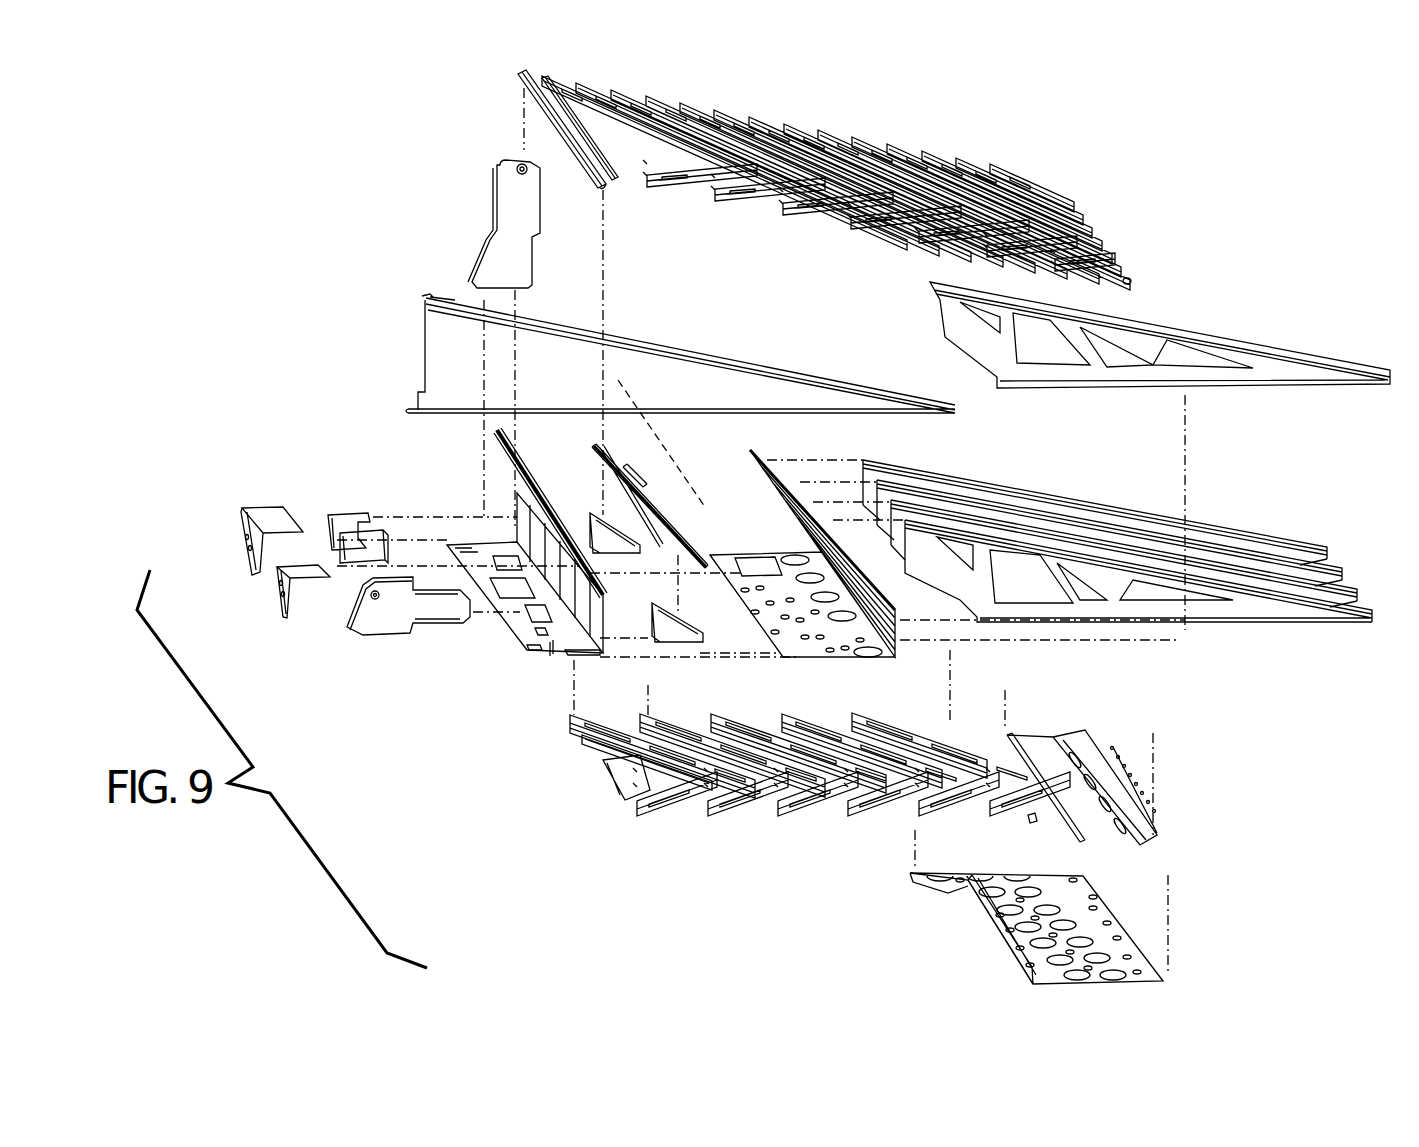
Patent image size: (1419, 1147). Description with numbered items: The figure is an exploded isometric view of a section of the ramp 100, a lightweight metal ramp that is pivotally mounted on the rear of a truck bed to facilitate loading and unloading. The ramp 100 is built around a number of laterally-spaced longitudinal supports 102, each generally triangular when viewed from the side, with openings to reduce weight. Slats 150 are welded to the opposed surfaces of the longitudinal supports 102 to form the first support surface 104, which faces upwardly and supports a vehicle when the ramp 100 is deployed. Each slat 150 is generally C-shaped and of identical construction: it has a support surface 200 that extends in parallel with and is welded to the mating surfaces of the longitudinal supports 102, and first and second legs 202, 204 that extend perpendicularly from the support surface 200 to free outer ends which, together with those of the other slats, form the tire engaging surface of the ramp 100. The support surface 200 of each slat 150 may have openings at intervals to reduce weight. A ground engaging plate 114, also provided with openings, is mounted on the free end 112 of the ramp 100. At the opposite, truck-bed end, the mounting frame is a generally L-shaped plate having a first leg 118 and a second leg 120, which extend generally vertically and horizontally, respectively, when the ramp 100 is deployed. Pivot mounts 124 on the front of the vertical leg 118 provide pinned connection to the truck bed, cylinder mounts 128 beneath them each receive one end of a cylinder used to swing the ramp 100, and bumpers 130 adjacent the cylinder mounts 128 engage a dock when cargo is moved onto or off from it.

The ramp 100 is at (1214, 123).
The longitudinal support 102 is at (680, 377).
The first support surface 104 is at (762, 110).
The free end 112 is at (1133, 927).
The ground engaging plate 114 is at (1095, 900).
The first leg 118 is at (582, 627).
The second leg 120 is at (513, 623).
The pivot mount 124 is at (500, 160).
The cylinder mount 128 is at (387, 617).
The bumper 130 is at (238, 548).
The slat 150 is at (1017, 168).
The support surface 200 is at (867, 232).
The first leg 202 is at (840, 225).
The second leg 204 is at (887, 230).